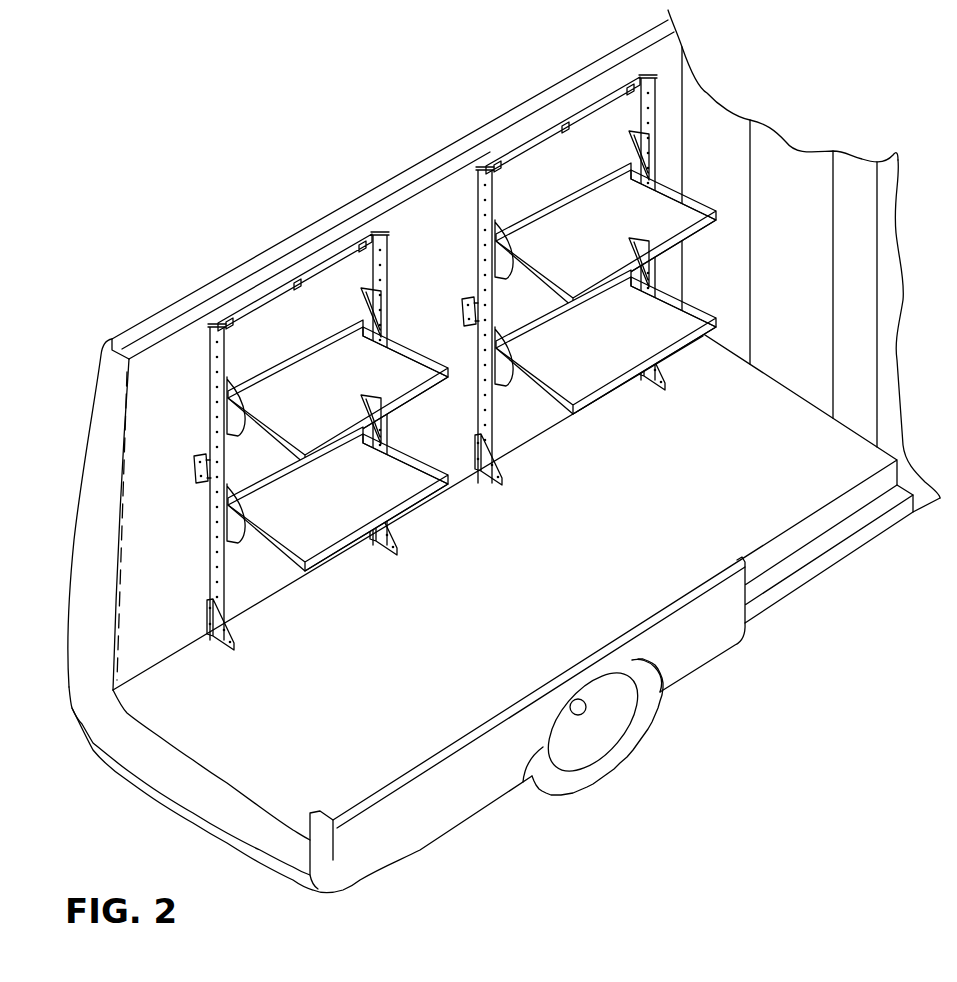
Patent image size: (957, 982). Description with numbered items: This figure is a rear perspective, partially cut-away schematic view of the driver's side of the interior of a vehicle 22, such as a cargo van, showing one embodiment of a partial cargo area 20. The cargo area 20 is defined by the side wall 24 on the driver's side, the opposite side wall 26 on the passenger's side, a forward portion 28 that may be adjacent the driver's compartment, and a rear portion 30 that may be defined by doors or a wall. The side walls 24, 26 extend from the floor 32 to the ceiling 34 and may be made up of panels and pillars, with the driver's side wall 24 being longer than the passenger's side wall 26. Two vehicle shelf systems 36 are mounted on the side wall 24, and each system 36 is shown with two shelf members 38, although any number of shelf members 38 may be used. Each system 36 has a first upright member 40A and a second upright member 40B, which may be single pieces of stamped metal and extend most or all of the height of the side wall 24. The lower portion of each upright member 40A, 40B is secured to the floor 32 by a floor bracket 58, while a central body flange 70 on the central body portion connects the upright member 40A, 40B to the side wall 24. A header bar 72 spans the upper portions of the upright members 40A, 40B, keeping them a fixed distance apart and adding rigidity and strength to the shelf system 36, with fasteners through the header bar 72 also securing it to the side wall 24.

The cargo area 20 is at (440, 182).
The vehicle 22 is at (624, 55).
The side wall 24 is at (681, 46).
The side wall 26 is at (415, 787).
The forward portion 28 is at (774, 170).
The rear portion 30 is at (170, 430).
The floor 32 is at (827, 480).
The ceiling 34 is at (277, 247).
The vehicle shelf system 36 is at (570, 82).
The shelf member 38 is at (203, 438).
The upright member 40A is at (210, 518).
The upright member 40B is at (388, 283).
The floor bracket 58 is at (217, 647).
The central body flange 70 is at (193, 467).
The header bar 72 is at (250, 305).